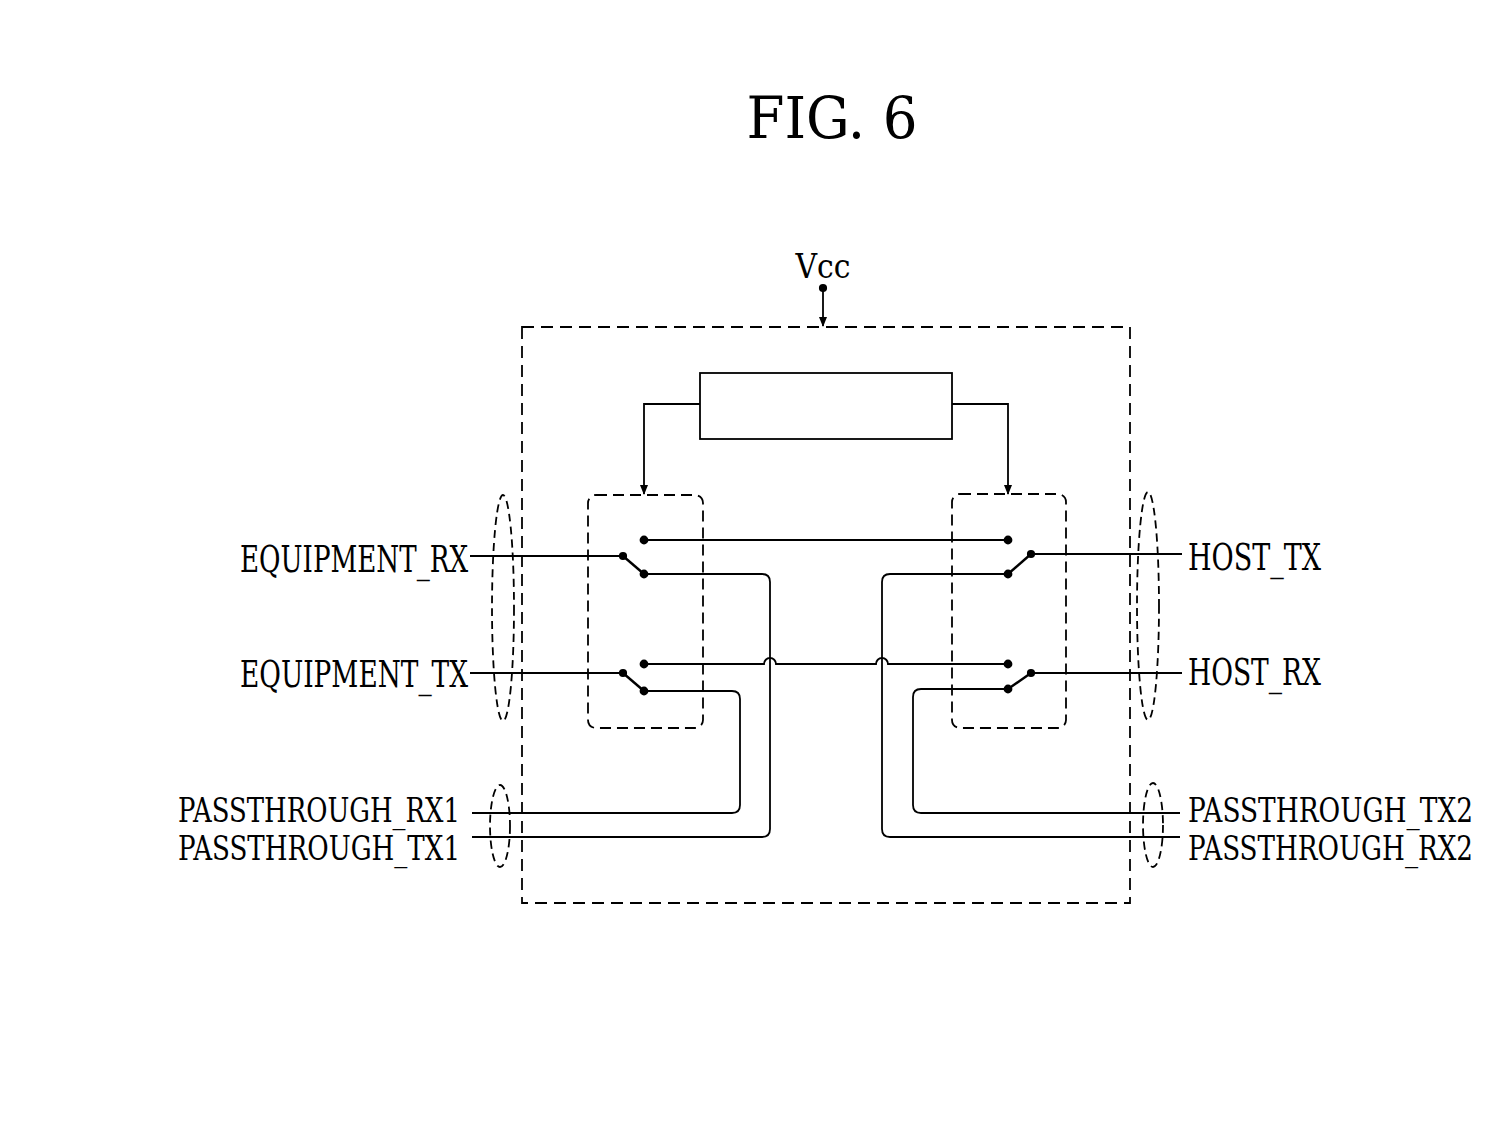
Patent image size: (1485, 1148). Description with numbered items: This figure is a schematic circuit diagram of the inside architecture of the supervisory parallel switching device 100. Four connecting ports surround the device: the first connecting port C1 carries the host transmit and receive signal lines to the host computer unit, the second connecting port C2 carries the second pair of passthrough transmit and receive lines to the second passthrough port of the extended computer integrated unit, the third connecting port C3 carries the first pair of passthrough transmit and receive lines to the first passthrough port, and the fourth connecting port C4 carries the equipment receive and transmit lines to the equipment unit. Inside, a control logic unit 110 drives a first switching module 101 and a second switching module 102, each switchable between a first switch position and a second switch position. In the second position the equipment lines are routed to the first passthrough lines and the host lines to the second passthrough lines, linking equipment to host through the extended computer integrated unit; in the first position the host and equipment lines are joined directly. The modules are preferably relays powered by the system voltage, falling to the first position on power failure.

The supervisory parallel switching device 100 is at (1038, 327).
The control logic unit 110 is at (952, 393).
The first switching module 101 is at (952, 518).
The second switching module 102 is at (703, 518).
The first connecting port C1 is at (1155, 586).
The second connecting port C2 is at (1157, 806).
The third connecting port C3 is at (500, 806).
The fourth connecting port C4 is at (503, 588).